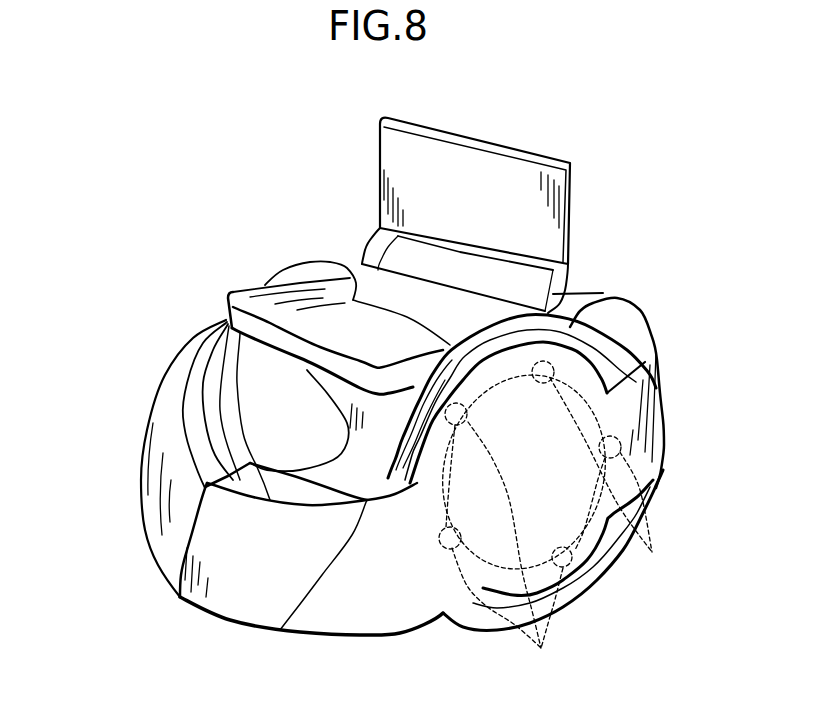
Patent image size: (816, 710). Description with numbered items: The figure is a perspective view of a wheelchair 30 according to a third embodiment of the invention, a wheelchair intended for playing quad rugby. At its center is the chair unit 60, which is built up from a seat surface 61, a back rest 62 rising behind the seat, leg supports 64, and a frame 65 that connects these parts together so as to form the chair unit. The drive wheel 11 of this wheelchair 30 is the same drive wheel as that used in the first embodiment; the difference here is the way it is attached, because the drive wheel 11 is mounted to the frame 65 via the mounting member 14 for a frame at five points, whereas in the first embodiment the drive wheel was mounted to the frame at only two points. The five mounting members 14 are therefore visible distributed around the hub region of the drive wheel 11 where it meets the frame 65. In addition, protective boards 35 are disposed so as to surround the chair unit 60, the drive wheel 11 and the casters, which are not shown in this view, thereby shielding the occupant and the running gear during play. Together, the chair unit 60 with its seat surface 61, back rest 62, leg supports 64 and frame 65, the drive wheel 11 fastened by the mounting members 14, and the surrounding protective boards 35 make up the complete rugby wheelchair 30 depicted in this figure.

The wheelchair 30 is at (672, 195).
The drive wheel 11 is at (573, 328).
The mounting member for a frame 14 is at (545, 523).
The protective board 35 is at (175, 525).
The chair unit 60 is at (303, 163).
The seat surface 61 is at (325, 263).
The back rest 62 is at (402, 160).
The leg support 64 is at (250, 505).
The frame 65 is at (260, 468).